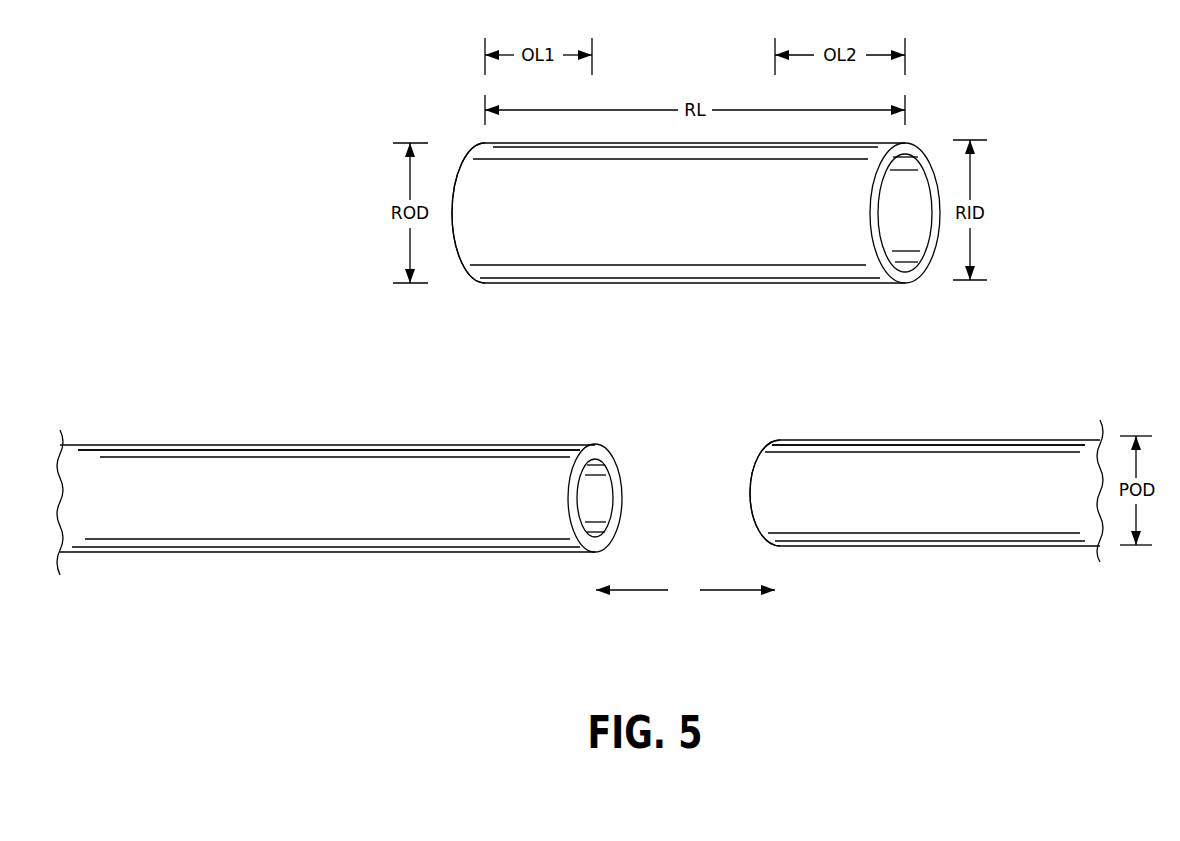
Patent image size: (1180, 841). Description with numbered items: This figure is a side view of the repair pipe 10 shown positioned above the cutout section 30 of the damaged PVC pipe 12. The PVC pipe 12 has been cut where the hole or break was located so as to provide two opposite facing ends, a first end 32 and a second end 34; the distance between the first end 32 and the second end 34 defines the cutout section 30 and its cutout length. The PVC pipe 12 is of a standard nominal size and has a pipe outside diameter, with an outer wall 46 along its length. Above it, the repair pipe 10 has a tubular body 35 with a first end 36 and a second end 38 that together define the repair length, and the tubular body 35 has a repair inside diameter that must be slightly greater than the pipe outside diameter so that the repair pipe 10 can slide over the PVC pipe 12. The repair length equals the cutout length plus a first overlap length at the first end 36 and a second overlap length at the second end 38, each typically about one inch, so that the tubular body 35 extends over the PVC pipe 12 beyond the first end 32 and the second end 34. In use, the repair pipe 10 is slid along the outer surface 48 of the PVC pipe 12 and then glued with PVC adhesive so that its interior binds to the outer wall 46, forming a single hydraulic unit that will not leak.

The repair pipe 10 is at (749, 213).
The PVC pipe 12 is at (260, 518).
The cutout section 30 is at (677, 470).
The first end 32 is at (596, 560).
The second end 34 is at (775, 560).
The tubular body 35 is at (640, 247).
The first end 36 is at (483, 289).
The second end 38 is at (905, 288).
The outer wall 46 is at (136, 480).
The outer surface 48 is at (707, 247).